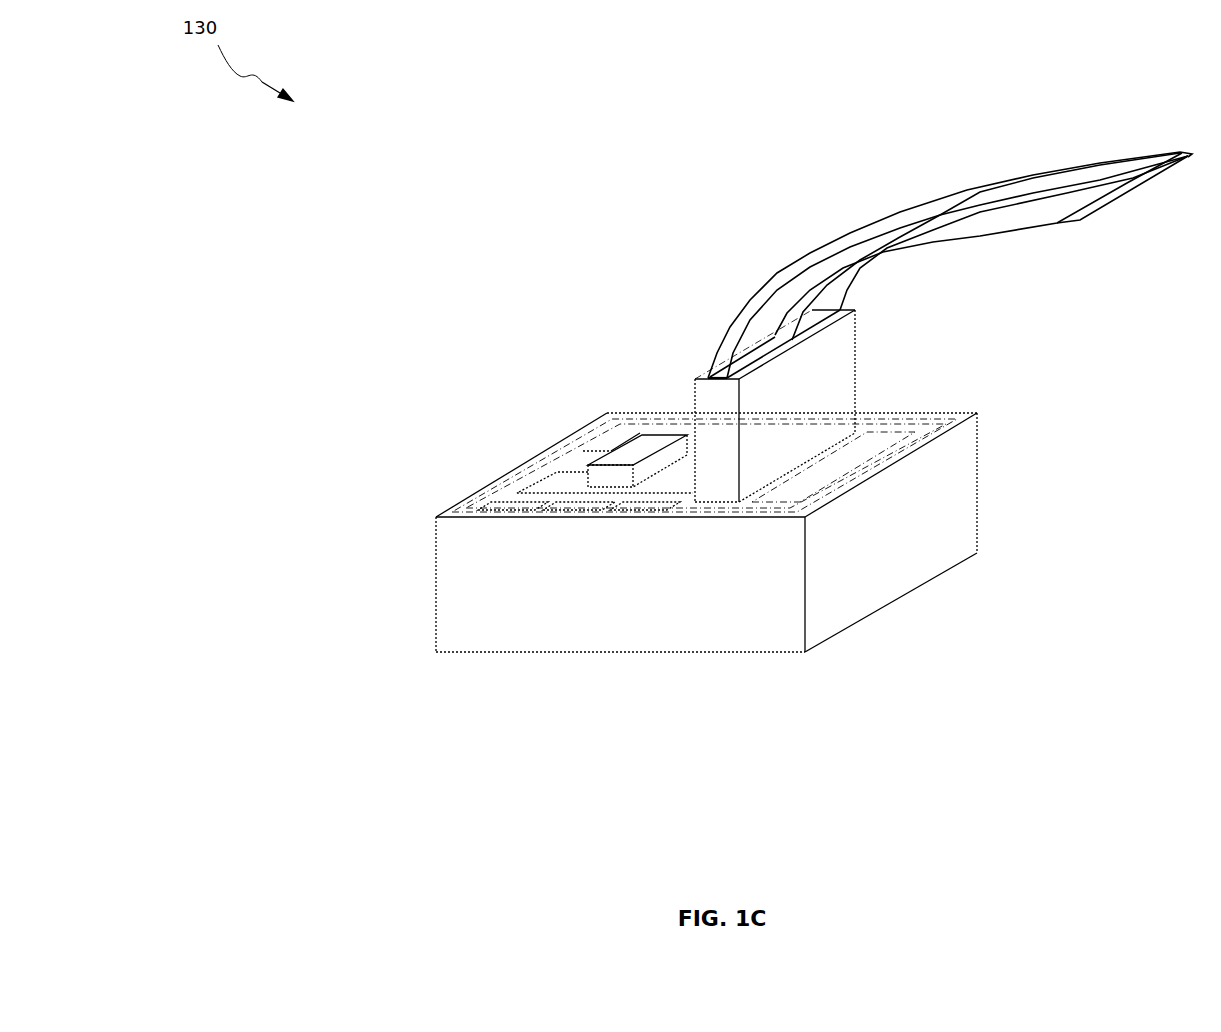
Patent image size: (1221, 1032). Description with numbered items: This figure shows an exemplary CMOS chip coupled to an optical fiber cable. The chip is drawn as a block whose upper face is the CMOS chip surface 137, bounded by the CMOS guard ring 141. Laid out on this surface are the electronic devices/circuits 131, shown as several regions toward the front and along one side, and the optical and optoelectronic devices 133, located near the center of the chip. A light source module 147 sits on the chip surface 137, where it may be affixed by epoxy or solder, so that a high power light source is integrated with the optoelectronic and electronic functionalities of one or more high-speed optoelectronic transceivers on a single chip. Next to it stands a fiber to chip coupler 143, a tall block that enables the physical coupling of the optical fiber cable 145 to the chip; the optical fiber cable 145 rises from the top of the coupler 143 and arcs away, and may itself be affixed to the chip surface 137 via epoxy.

The electronic devices/circuits 131 is at (638, 528).
The optical and optoelectronic devices 133 is at (543, 473).
The CMOS chip surface 137 is at (572, 455).
The CMOS guard ring 141 is at (962, 482).
The fiber to chip coupler 143 is at (858, 339).
The optical fiber cable 145 is at (886, 202).
The light source module 147 is at (631, 420).